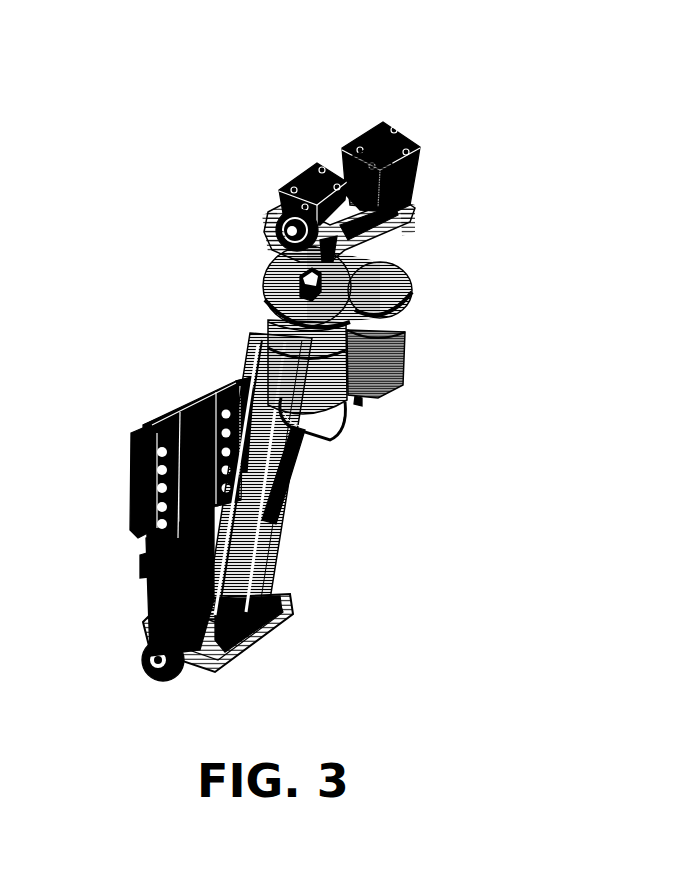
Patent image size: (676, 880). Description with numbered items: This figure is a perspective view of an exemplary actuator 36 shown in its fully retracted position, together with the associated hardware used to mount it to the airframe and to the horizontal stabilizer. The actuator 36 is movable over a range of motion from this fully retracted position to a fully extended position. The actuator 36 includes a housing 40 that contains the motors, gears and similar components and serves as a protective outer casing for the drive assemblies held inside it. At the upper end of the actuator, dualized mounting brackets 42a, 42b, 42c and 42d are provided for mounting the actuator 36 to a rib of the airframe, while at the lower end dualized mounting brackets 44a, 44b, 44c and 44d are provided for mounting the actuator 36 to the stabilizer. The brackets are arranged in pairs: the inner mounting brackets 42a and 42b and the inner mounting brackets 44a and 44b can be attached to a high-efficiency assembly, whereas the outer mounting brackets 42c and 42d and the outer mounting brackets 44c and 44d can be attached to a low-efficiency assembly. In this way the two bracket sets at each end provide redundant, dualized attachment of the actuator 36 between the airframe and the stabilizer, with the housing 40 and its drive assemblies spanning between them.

The actuator 36 is at (540, 162).
The housing 40 is at (383, 372).
The inner mounting bracket 42a is at (313, 163).
The inner mounting bracket 42b is at (352, 140).
The outer mounting bracket 42c is at (277, 190).
The outer mounting bracket 42d is at (393, 138).
The inner mounting bracket 44a is at (157, 424).
The inner mounting bracket 44b is at (219, 386).
The outer mounting bracket 44c is at (147, 433).
The outer mounting bracket 44d is at (237, 380).